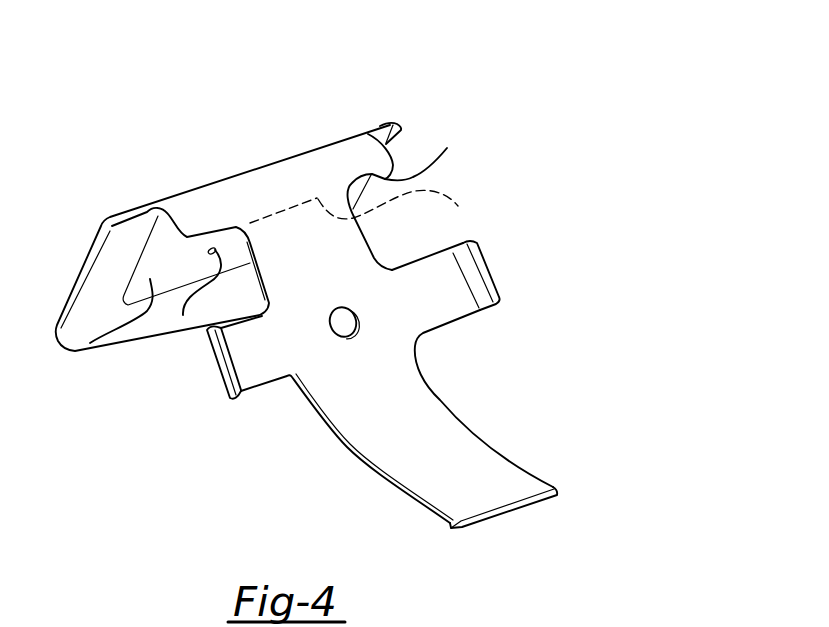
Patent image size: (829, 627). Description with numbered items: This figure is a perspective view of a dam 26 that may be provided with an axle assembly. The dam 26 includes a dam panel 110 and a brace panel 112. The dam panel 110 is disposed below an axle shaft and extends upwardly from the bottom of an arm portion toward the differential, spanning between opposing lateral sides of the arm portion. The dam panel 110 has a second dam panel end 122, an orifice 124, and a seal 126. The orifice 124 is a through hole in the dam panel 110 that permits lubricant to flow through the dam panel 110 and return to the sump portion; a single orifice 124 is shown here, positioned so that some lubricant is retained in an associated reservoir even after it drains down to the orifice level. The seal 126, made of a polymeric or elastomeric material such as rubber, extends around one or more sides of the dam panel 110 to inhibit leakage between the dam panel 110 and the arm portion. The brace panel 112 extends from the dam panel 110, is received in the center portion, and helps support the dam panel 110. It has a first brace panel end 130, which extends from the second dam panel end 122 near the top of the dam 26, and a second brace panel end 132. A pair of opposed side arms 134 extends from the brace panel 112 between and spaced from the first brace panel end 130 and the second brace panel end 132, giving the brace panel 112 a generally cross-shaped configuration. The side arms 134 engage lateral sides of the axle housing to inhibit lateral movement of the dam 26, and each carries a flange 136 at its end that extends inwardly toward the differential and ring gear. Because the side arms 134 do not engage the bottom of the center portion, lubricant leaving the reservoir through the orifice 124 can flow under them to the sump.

The dam 26 is at (408, 72).
The dam panel 110 is at (90, 343).
The brace panel 112 is at (317, 253).
The second dam panel end 122 is at (447, 148).
The orifice 124 is at (183, 315).
The seal 126 is at (120, 218).
The first brace panel end 130 is at (370, 207).
The second brace panel end 132 is at (502, 513).
The side arm 134 is at (284, 354).
The flange 136 is at (227, 373).